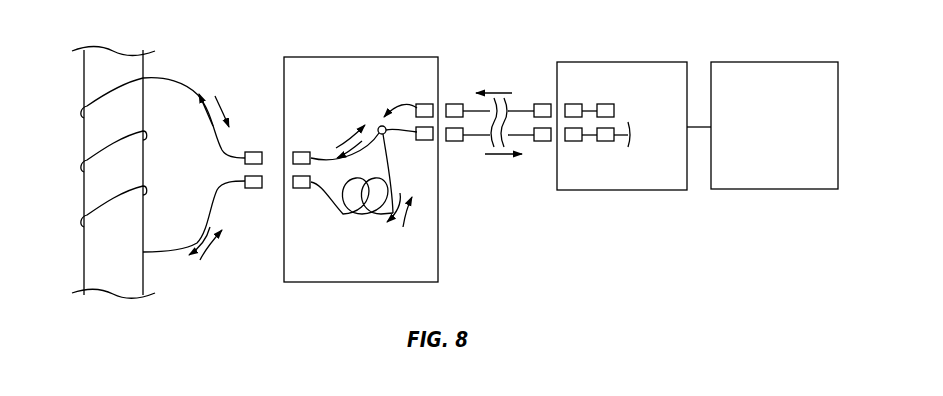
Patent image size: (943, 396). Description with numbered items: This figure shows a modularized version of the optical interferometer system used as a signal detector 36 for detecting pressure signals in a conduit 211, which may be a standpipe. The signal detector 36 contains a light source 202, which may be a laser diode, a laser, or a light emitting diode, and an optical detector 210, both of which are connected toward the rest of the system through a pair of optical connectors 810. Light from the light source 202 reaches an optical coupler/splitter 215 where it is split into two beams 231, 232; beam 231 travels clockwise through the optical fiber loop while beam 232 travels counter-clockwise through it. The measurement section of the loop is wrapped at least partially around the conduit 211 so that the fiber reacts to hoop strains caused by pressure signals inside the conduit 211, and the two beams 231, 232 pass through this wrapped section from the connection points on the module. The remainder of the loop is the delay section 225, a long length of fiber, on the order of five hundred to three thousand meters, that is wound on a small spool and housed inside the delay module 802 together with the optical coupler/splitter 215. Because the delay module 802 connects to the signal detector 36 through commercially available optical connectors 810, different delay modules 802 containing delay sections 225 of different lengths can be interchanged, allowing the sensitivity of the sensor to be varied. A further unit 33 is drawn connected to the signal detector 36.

The conduit 211 is at (84, 78).
The beam 231 is at (213, 114).
The beam 232 is at (216, 97).
The delay module 802 is at (390, 57).
The optical connector 810 is at (427, 104).
The optical coupler/splitter 215 is at (385, 133).
The delay section 225 is at (367, 215).
The signal detector 36 is at (633, 62).
The light source 202 is at (605, 104).
The optical detector 210 is at (605, 141).
The power supply unit 33 is at (783, 62).